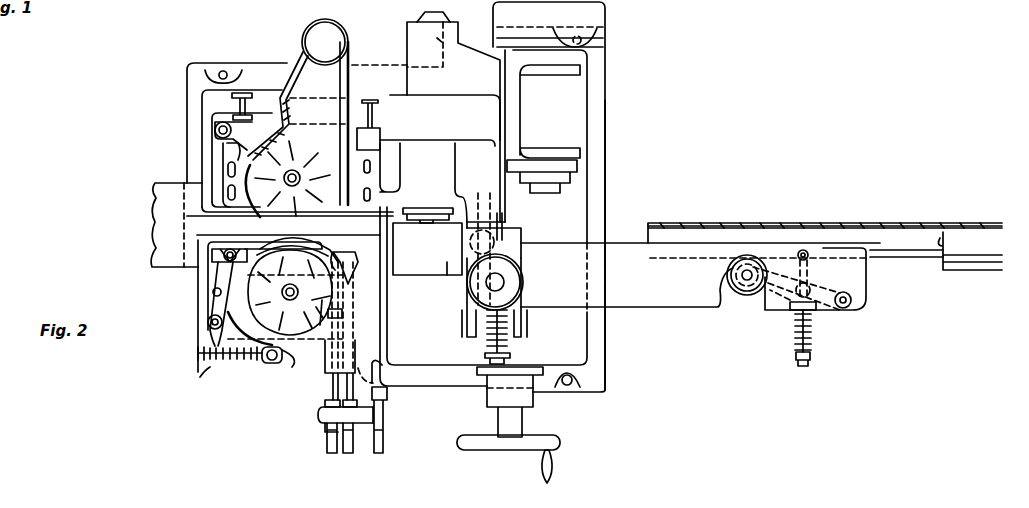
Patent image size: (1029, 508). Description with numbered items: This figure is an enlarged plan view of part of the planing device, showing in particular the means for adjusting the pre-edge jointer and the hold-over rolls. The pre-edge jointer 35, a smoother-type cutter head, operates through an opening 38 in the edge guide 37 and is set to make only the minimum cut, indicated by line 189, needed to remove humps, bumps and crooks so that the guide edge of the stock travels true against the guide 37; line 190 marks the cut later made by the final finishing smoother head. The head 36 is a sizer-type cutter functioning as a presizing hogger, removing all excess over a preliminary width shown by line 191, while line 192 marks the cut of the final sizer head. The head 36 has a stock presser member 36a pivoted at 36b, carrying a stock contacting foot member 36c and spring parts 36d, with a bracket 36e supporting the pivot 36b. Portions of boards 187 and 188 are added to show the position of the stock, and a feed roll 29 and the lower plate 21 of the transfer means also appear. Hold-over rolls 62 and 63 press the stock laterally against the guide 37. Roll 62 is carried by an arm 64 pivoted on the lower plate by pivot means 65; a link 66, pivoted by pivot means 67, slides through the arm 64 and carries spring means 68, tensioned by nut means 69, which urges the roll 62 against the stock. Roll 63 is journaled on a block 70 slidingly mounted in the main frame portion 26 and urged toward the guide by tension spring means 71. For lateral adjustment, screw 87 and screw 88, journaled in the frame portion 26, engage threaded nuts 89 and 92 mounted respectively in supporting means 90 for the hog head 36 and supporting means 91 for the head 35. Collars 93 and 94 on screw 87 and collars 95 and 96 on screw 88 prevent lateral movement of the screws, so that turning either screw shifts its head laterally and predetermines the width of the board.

The pre-edge jointer 35 is at (345, 100).
The supporting means 91 is at (380, 120).
The threaded nut 92 is at (382, 143).
The edge guide 37 is at (250, 210).
The opening 38 is at (288, 205).
The stock contacting foot member 36c is at (427, 249).
The block 70 is at (505, 260).
The bracket 36e is at (212, 300).
The supporting means 90 is at (352, 283).
The feed roll 29 is at (447, 275).
The pivot 36b is at (208, 325).
The threaded nut 89 is at (345, 320).
The hold-over roll 63 is at (523, 295).
The tension spring means 71 is at (510, 343).
The spring parts 36d is at (250, 349).
The collar 93 is at (327, 403).
The hogger head 36 is at (307, 333).
The stock presser member 36a is at (287, 367).
The collar 94 is at (318, 418).
The collar 95 is at (357, 402).
The collar 96 is at (374, 420).
The screw 87 is at (323, 447).
The screw 88 is at (350, 453).
The lower plate 21 is at (690, 302).
The main frame portion 26 is at (594, 342).
The hold-over roll 62 is at (737, 293).
The arm 64 is at (780, 305).
The pivot means 65 is at (848, 308).
The pivot means 67 is at (805, 250).
The link 66 is at (825, 260).
The line 189 is at (904, 226).
The line 190 is at (936, 240).
The board 187 is at (825, 234).
The board 188 is at (972, 251).
The line 192 is at (900, 260).
The line 191 is at (943, 258).
The spring means 68 is at (815, 338).
The nut means 69 is at (810, 362).